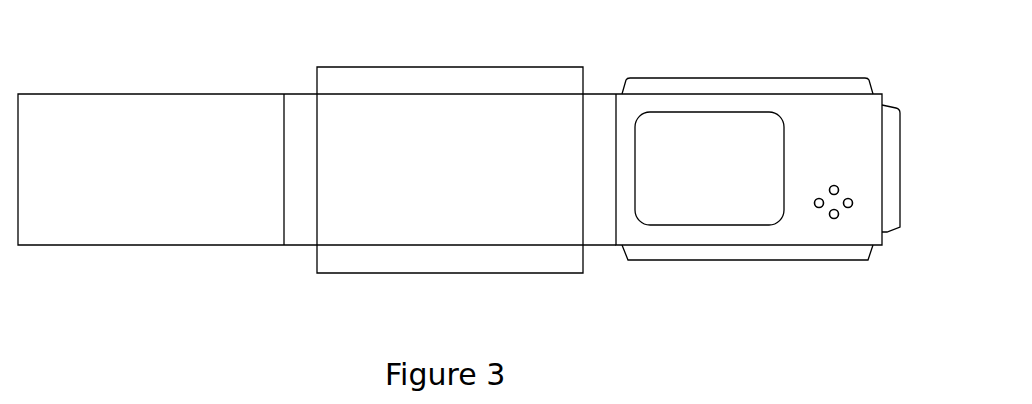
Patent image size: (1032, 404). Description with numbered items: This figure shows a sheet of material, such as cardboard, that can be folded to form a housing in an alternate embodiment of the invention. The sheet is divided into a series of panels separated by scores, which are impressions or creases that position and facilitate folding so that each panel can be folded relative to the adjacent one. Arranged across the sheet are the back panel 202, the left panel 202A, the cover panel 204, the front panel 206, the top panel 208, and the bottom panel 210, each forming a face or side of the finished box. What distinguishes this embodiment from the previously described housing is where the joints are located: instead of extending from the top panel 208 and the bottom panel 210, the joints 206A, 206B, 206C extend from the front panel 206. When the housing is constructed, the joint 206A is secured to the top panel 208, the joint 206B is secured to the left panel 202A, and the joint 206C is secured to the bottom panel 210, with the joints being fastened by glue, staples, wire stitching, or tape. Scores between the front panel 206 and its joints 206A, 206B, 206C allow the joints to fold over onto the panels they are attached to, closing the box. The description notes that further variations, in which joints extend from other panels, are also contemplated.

The back panel 202 is at (367, 196).
The left panel 202A is at (298, 158).
The cover panel 204 is at (173, 130).
The front panel 206 is at (807, 223).
The joint 206A is at (662, 78).
The joint 206B is at (889, 233).
The joint 206C is at (625, 262).
The top panel 208 is at (367, 78).
The bottom panel 210 is at (367, 262).